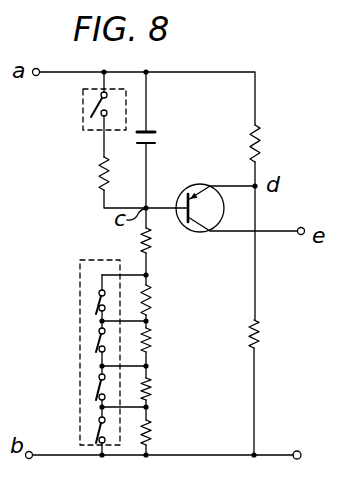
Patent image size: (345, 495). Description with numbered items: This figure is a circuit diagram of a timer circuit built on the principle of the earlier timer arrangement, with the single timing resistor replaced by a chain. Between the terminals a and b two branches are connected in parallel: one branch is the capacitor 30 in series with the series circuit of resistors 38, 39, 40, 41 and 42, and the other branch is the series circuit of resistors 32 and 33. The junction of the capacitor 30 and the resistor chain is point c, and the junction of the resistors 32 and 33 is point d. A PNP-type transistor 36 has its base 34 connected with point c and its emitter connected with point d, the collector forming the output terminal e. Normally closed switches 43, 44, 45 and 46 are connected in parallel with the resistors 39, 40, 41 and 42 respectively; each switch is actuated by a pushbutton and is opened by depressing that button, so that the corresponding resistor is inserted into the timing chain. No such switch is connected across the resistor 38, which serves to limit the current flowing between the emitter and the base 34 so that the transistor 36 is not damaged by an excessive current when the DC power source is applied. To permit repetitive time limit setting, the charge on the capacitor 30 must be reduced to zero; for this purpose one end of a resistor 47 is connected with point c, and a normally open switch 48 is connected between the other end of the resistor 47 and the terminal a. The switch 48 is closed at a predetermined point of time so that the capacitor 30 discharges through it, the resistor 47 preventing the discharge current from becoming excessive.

The capacitor 30 is at (158, 136).
The resistor 32 is at (270, 136).
The resistor 33 is at (259, 338).
The base 34 is at (179, 201).
The PNP-type transistor 36 is at (200, 184).
The resistor 38 is at (150, 242).
The resistor 39 is at (150, 298).
The resistor 40 is at (150, 335).
The resistor 41 is at (150, 388).
The resistor 42 is at (150, 431).
The normally closed switch 43 is at (80, 293).
The normally closed switch 44 is at (96, 347).
The normally closed switch 45 is at (97, 388).
The normally closed switch 46 is at (92, 431).
The resistor 47 is at (96, 181).
The normally open switch 48 is at (82, 91).